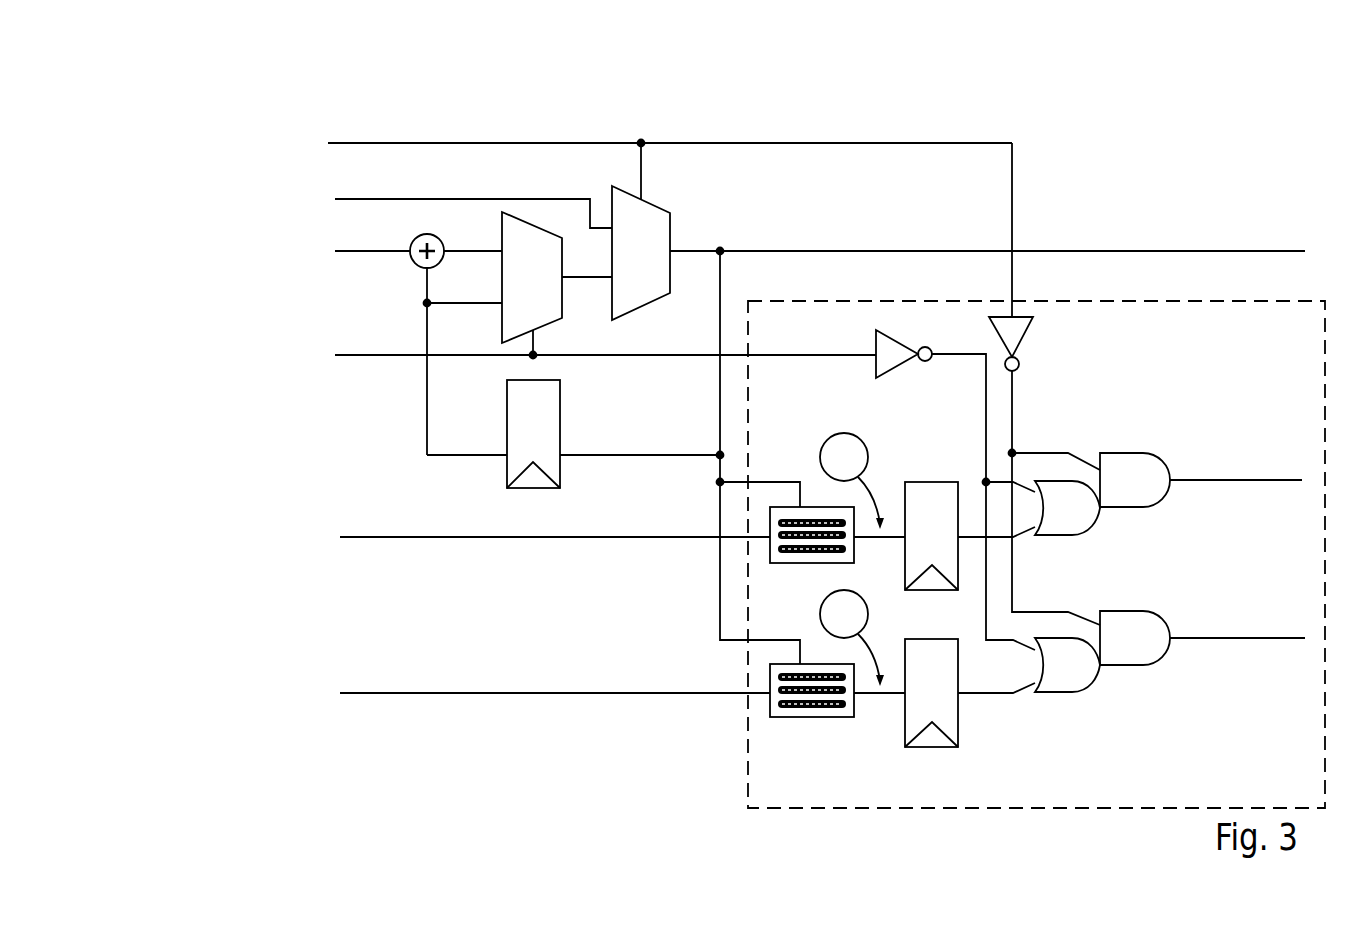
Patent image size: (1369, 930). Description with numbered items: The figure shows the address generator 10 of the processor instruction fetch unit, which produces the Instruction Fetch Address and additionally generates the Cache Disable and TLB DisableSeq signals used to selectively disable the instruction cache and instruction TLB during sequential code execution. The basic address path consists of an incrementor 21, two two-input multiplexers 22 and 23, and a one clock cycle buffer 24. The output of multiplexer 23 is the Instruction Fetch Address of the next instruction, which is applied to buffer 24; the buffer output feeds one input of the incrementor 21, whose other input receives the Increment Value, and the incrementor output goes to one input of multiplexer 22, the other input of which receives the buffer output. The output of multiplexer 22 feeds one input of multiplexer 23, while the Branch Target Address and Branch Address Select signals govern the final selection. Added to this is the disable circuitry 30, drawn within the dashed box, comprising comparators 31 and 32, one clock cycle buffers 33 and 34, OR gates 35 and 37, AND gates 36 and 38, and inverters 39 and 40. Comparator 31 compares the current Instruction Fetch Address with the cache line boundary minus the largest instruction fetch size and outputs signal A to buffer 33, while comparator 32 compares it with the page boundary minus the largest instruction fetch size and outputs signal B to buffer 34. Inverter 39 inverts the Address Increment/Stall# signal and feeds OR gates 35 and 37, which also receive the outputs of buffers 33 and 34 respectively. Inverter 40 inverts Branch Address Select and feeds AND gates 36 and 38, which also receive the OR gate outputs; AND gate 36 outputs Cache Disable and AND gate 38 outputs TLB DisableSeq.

The address generator 10 is at (1130, 64).
The incrementor 21 is at (404, 263).
The multiplexer 22 is at (523, 221).
The multiplexer 23 is at (666, 210).
The buffer 24 is at (560, 425).
The disable circuitry 30 is at (1278, 374).
The comparator 31 is at (815, 564).
The comparator 32 is at (815, 718).
The buffer 33 is at (945, 482).
The buffer 34 is at (958, 722).
The OR gate 35 is at (1068, 537).
The AND gate 36 is at (1148, 508).
The OR gate 37 is at (1072, 694).
The AND gate 38 is at (1148, 667).
The inverter 39 is at (893, 368).
The inverter 40 is at (1025, 333).